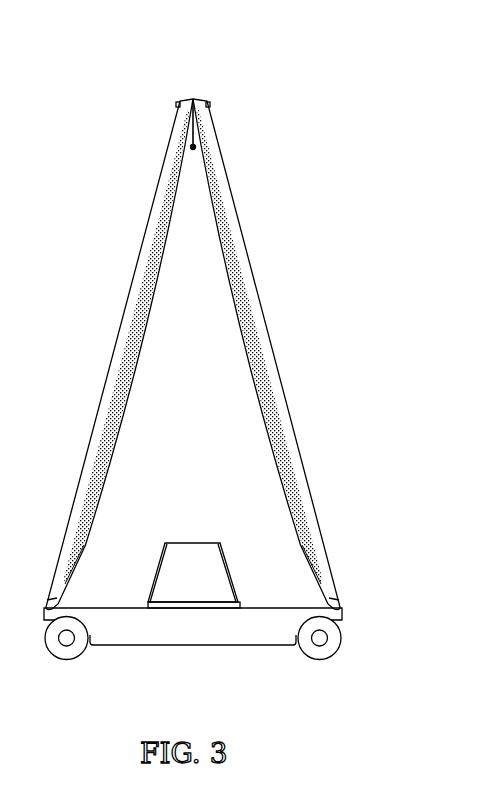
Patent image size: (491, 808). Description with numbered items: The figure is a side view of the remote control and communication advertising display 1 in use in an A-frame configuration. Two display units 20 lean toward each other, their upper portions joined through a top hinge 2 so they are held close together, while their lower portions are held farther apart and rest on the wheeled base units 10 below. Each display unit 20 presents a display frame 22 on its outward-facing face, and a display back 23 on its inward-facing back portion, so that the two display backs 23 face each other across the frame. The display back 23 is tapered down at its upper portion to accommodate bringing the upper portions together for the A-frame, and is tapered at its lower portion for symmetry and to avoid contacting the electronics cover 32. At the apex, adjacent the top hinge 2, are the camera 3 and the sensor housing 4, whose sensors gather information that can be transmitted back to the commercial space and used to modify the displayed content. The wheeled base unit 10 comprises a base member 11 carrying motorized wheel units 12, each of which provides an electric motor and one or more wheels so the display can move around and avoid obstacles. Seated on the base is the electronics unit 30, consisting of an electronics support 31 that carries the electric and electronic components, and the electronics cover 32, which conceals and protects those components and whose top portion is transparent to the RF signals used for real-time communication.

The remote control and communication advertising display 1 is at (100, 56).
The top hinge 2 is at (190, 125).
The camera 3 is at (176, 104).
The sensor housing 4 is at (46, 600).
The wheeled base unit 10 is at (283, 654).
The base member 11 is at (146, 647).
The motorized wheel unit 12 is at (67, 642).
The display unit 20 is at (185, 87).
The display frame 22 is at (160, 197).
The display back 23 is at (166, 244).
The electronics unit 30 is at (200, 533).
The electronics support 31 is at (242, 606).
The electronics cover 32 is at (165, 566).